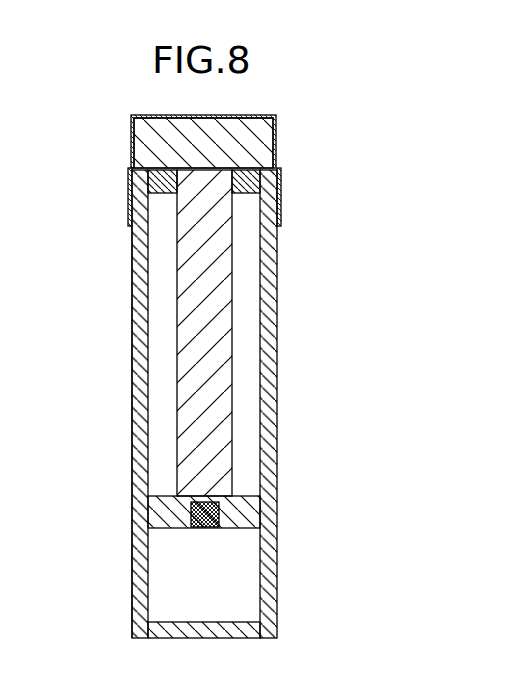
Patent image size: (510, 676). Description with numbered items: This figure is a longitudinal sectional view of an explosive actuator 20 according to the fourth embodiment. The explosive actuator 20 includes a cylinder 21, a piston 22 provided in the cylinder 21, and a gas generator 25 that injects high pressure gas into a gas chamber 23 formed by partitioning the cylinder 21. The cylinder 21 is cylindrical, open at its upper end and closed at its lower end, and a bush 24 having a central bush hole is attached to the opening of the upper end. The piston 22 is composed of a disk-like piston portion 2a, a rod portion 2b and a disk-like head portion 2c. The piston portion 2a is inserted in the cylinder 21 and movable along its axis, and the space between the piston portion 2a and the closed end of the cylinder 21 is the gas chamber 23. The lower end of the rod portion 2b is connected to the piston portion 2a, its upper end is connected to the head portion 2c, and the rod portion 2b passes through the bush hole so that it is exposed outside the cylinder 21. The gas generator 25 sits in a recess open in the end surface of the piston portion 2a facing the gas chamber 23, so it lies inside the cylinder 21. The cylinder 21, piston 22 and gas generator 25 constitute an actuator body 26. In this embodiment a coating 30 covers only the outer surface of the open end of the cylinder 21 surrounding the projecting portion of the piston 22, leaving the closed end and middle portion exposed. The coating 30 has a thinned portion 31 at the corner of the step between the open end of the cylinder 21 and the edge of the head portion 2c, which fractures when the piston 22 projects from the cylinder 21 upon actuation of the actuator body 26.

The explosive actuator 20 is at (297, 76).
The cylinder 21 is at (133, 260).
The piston 22 is at (240, 320).
The gas chamber 23 is at (162, 572).
The bush 24 is at (155, 184).
The gas generator 25 is at (207, 529).
The actuator body 26 is at (128, 418).
The coating 30 is at (282, 210).
The thinned portion 31 is at (280, 152).
The piston portion 2a is at (160, 517).
The rod portion 2b is at (186, 333).
The head portion 2c is at (146, 139).